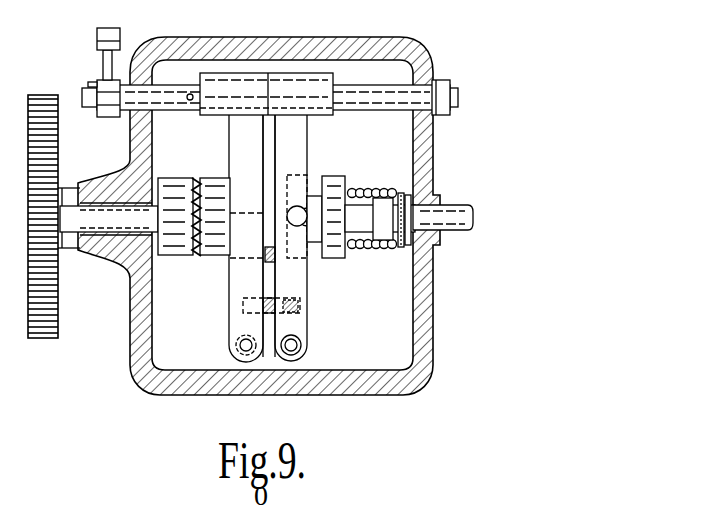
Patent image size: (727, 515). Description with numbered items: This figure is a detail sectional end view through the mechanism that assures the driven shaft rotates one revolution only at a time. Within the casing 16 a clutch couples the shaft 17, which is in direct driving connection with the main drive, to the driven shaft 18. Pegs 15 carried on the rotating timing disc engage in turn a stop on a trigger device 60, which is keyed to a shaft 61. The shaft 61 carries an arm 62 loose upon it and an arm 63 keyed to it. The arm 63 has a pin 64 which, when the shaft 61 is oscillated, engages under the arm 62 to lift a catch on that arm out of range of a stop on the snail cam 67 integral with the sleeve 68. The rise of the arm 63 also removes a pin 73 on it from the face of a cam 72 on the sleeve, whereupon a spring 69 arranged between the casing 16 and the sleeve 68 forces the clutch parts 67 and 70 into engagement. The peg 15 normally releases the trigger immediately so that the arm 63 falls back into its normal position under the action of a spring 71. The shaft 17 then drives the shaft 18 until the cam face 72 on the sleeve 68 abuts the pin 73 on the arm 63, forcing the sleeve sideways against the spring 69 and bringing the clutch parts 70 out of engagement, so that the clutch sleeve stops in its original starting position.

The pegs 15 is at (113, 29).
The casing 16 is at (421, 49).
The shaft 17 is at (86, 252).
The driven shaft 18 is at (447, 205).
The trigger device 60 is at (103, 66).
The shaft 61 is at (163, 90).
The arm 62 is at (227, 308).
The arm 63 is at (302, 166).
The pin 64 is at (305, 319).
The snail cam 67 is at (216, 178).
The sleeve 68 is at (345, 187).
The spring 69 is at (374, 194).
The clutch part 70 is at (181, 178).
The spring 71 is at (301, 347).
The cam face 72 is at (396, 242).
The pin 73 is at (297, 218).